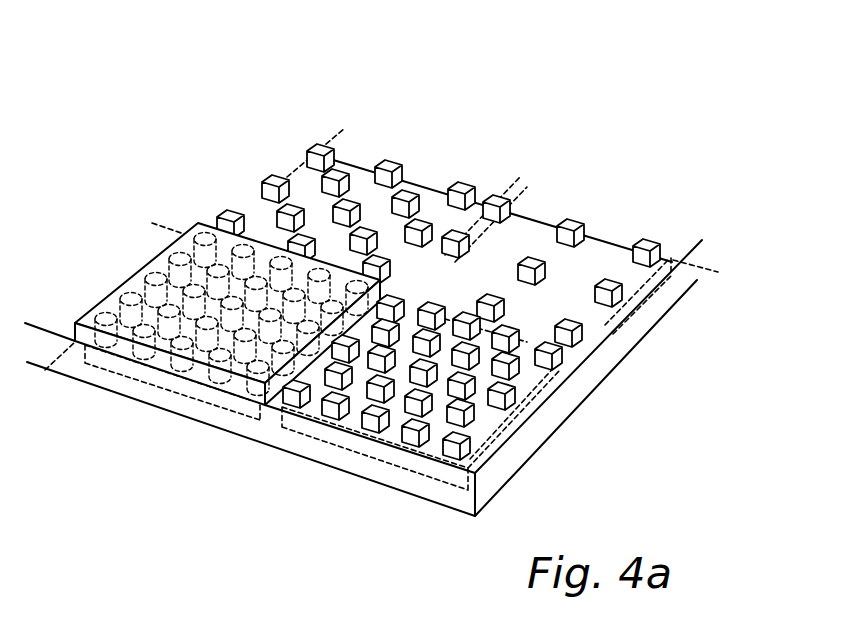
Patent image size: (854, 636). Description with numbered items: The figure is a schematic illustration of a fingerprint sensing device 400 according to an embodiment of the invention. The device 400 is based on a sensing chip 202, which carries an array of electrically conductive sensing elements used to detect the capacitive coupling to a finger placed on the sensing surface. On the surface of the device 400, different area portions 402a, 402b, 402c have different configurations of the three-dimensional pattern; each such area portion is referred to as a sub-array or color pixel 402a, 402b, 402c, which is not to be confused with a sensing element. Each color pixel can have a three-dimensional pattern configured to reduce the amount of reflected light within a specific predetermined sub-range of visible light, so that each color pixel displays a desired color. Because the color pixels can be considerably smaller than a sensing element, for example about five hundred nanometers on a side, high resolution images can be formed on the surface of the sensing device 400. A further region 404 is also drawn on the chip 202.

The fingerprint sensing device 400 is at (388, 271).
The sensing chip 202 is at (643, 318).
The area portion 402a is at (297, 172).
The area portion 402b is at (546, 221).
The area portion 402c is at (507, 423).
The block with cylindrical wells 404 is at (167, 287).